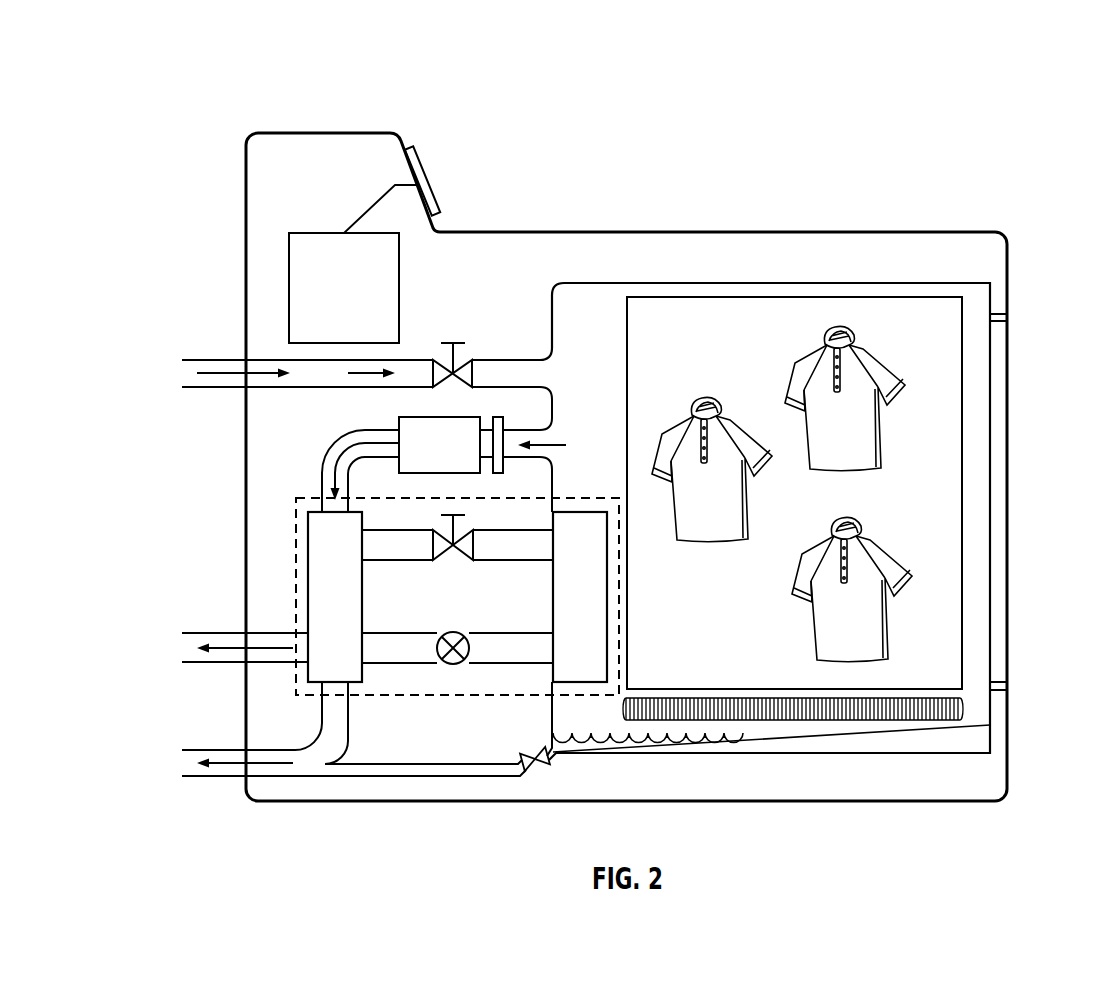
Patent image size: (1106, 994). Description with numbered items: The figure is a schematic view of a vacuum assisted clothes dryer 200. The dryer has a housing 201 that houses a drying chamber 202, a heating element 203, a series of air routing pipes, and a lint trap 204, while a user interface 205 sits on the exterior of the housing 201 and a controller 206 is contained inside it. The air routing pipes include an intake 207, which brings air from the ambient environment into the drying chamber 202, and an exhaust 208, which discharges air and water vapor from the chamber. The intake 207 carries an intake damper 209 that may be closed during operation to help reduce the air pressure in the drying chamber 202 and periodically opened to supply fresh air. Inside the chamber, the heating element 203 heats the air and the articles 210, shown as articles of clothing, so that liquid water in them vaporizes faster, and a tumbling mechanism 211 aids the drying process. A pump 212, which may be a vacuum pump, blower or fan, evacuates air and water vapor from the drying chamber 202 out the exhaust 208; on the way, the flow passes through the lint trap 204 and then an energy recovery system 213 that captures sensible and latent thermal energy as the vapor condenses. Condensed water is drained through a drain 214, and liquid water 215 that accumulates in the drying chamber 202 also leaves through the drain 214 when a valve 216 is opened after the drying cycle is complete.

The vacuum assisted clothes dryer 200 is at (227, 94).
The housing 201 is at (960, 232).
The drying chamber 202 is at (907, 282).
The heating element 203 is at (965, 710).
The lint trap 204 is at (503, 420).
The user interface 205 is at (427, 174).
The controller 206 is at (322, 233).
The intake 207 is at (203, 360).
The exhaust 208 is at (203, 633).
The intake damper 209 is at (456, 343).
The articles 210 is at (727, 503).
The tumbling mechanism 211 is at (800, 297).
The pump 212 is at (399, 427).
The energy recovery system 213 is at (295, 523).
The drain 214 is at (203, 750).
The liquid water 215 is at (588, 750).
The valve 216 is at (529, 752).